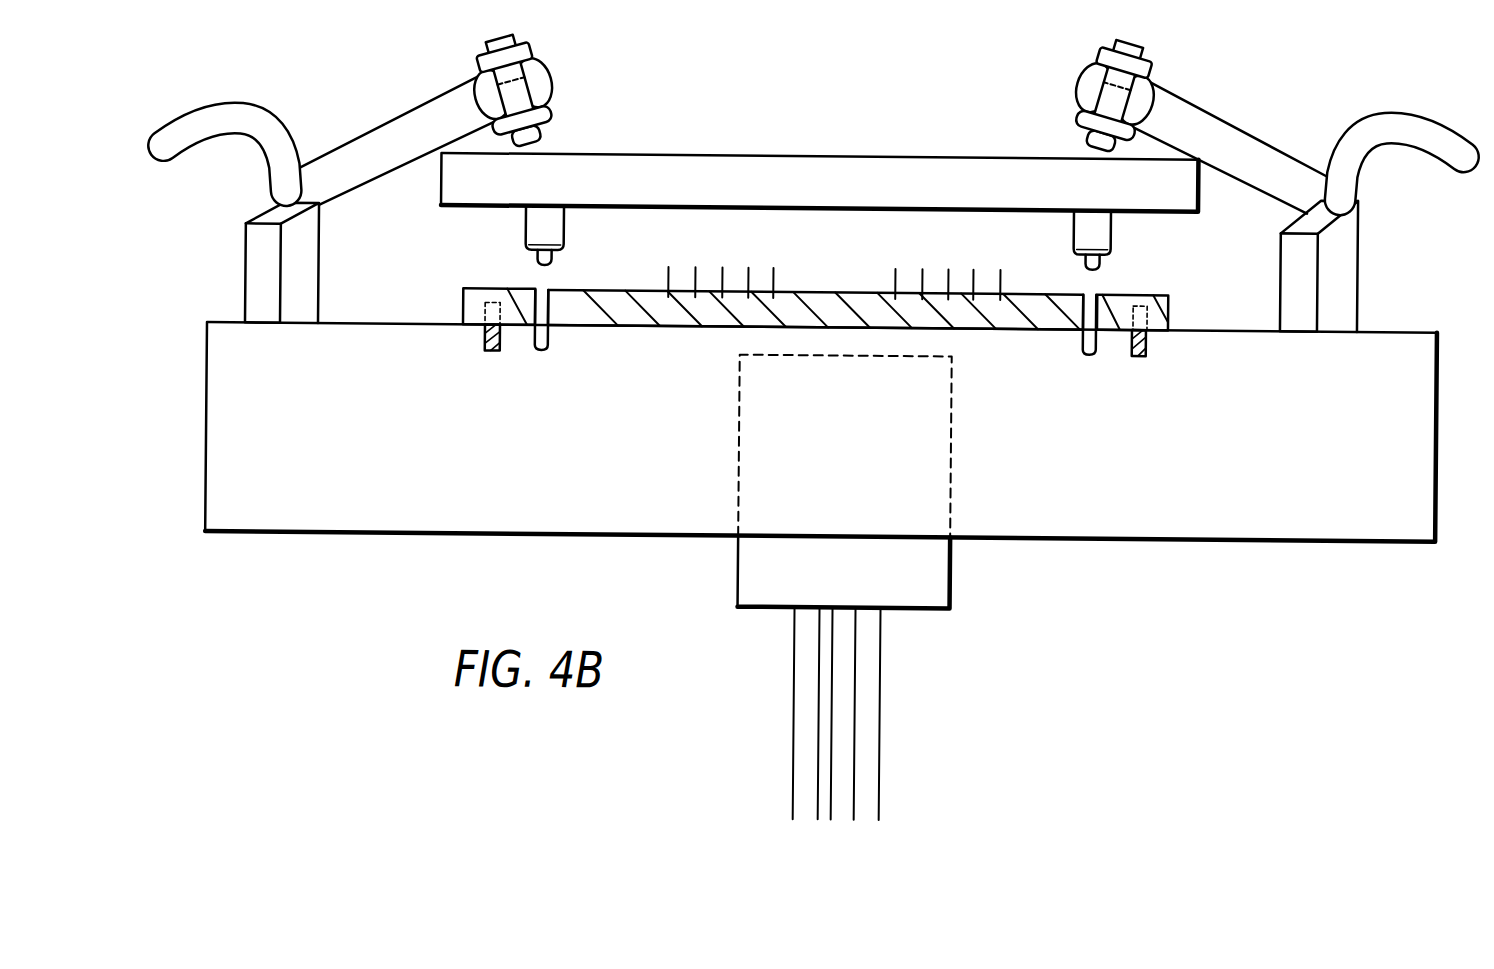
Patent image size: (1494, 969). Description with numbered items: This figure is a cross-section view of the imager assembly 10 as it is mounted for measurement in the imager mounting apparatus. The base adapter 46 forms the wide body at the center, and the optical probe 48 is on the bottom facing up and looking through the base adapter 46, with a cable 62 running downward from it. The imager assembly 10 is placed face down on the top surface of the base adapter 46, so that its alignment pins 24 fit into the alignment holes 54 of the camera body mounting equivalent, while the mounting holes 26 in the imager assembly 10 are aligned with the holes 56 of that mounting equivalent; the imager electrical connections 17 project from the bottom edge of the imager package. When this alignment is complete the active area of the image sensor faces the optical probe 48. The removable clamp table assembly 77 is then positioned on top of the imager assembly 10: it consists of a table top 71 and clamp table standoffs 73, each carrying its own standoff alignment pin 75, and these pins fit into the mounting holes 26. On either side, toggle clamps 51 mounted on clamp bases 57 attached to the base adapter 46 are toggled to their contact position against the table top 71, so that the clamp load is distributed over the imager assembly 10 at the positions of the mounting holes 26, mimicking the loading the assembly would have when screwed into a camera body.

The imager assembly 10 is at (617, 297).
The imager electrical connections 17 is at (678, 254).
The alignment pins 24 is at (483, 303).
The mounting holes 26 is at (545, 290).
The base adapter 46 is at (552, 478).
The optical probe 48 is at (937, 560).
The toggle clamps 51 is at (353, 143).
The alignment holes 54 is at (487, 350).
The holes 56 is at (547, 340).
The clamp bases 57 is at (250, 250).
The cable 62 is at (898, 804).
The table top 71 is at (805, 167).
The clamp table standoffs 73 is at (523, 228).
The standoff alignment pins 75 is at (553, 250).
The removable clamp table assembly 77 is at (820, 169).